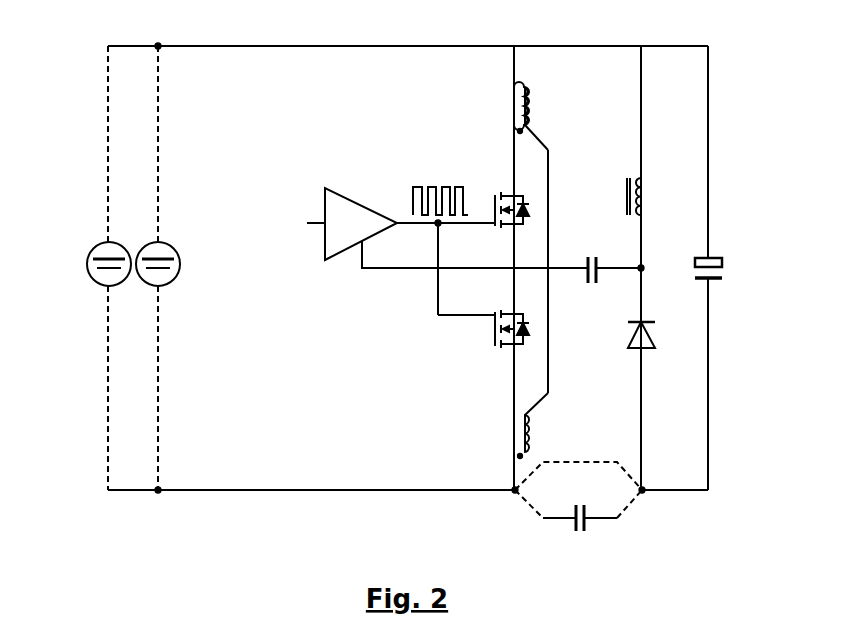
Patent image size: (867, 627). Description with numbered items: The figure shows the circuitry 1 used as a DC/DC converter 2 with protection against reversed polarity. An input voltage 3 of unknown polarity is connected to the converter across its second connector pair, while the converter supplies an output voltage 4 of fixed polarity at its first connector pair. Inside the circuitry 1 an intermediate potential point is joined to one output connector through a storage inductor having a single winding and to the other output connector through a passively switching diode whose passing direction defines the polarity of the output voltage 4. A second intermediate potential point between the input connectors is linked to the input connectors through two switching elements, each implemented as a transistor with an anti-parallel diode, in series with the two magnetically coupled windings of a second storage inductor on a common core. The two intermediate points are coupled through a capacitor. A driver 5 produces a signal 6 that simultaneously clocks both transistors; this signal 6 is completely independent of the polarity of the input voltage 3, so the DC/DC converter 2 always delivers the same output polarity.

The circuitry 1 is at (499, 509).
The DC/DC converter 2 is at (752, 117).
The input voltage 3 is at (84, 240).
The output voltage 4 is at (731, 247).
The driver 5 is at (334, 256).
The signal 6 is at (418, 187).